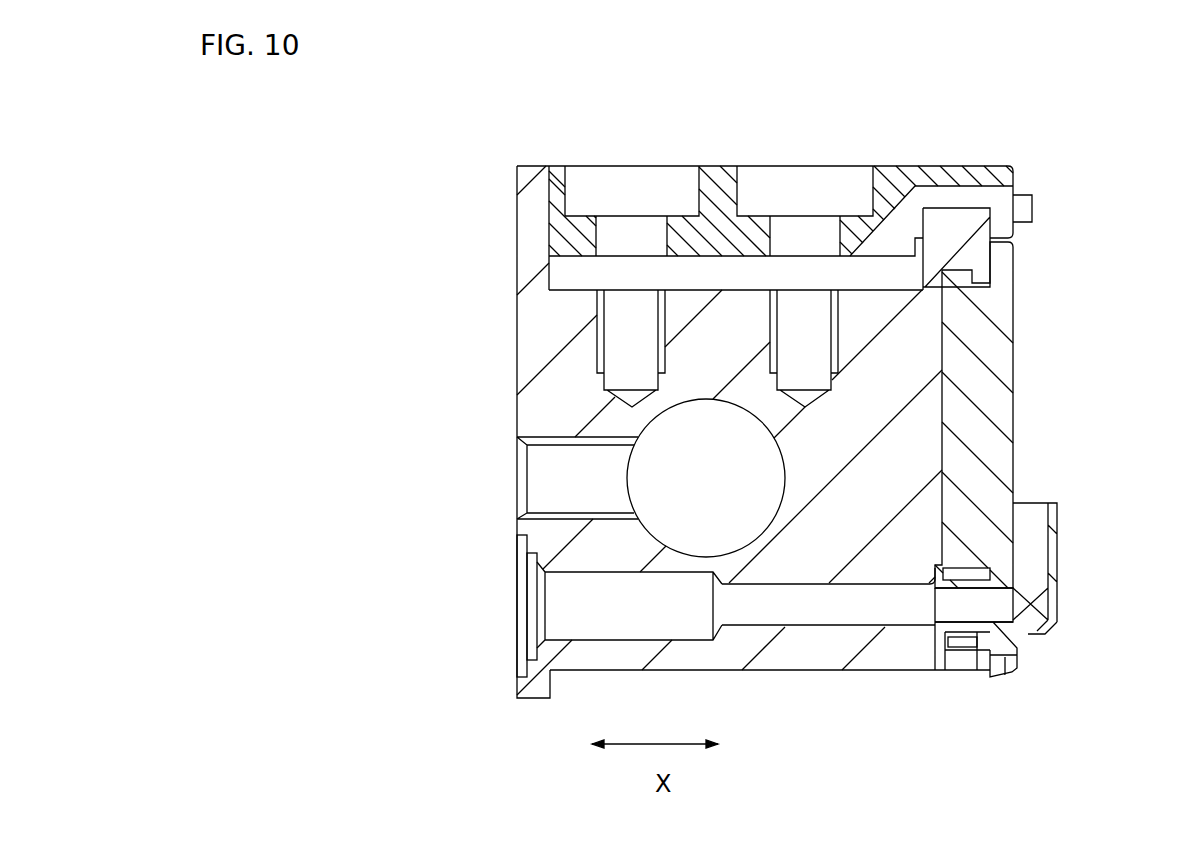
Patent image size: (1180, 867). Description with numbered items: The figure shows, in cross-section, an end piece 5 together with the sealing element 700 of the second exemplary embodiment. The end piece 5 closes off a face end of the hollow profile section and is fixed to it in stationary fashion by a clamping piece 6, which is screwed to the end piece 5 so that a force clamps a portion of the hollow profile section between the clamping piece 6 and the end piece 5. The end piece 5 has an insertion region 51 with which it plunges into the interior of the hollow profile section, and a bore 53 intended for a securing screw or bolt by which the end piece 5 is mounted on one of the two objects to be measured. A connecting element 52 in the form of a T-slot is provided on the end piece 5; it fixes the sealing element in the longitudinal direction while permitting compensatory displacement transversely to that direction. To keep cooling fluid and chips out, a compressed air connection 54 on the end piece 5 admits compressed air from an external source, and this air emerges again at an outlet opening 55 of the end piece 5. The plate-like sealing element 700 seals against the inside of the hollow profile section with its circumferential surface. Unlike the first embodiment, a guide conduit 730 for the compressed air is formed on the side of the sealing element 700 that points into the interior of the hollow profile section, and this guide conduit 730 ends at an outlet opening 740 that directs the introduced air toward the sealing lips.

The end piece 5 is at (540, 244).
The clamping piece 6 is at (1003, 178).
The insertion region 51 is at (815, 652).
The connecting element 52 is at (975, 285).
The bore 53 is at (665, 486).
The compressed air connection 54 is at (527, 605).
The outlet opening 55 is at (933, 598).
The sealing element 700 is at (1000, 362).
The guide conduit 730 is at (1030, 574).
The outlet opening 740 is at (1040, 498).